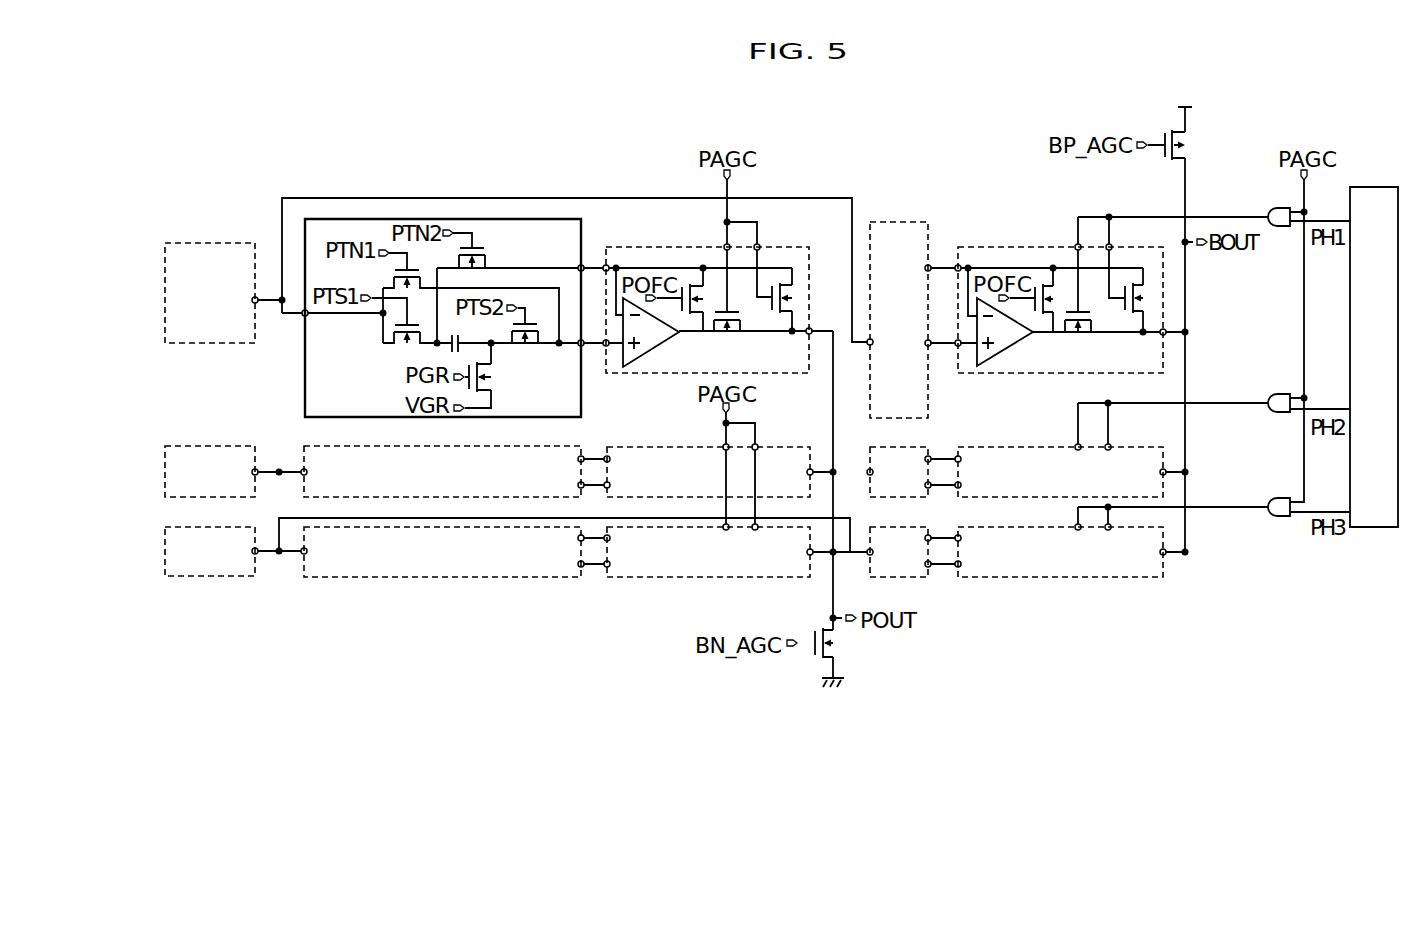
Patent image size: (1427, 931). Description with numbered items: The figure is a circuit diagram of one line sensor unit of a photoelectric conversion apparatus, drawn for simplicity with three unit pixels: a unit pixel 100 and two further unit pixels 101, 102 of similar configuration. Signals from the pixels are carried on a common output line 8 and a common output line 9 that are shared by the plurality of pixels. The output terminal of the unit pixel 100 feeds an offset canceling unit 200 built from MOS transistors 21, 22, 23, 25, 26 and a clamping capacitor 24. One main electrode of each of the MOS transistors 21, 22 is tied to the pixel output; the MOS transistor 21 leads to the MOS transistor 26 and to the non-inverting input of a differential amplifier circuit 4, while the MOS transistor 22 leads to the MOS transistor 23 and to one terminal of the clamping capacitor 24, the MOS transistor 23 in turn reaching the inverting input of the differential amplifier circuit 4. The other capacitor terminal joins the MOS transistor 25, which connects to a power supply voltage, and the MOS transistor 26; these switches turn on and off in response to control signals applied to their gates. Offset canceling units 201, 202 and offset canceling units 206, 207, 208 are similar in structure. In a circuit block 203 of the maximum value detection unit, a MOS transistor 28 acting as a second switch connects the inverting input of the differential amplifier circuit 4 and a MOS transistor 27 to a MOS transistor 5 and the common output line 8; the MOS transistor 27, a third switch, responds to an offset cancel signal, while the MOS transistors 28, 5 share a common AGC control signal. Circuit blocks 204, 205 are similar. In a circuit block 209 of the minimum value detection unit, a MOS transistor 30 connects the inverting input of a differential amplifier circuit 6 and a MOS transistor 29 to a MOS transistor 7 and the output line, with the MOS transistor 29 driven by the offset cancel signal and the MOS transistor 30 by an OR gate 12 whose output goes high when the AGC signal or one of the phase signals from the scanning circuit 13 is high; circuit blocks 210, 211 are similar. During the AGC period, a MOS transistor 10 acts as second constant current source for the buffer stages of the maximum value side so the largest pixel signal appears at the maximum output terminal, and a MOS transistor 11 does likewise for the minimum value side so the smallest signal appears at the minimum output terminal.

The differential amplifier circuit 4 is at (668, 336).
The MOS transistor 5 is at (740, 336).
The differential amplifier circuit 6 is at (1015, 338).
The MOS transistor 7 is at (1085, 336).
The common output line 8 is at (835, 430).
The common output line 9 is at (1187, 360).
The MOS transistor 10 is at (843, 648).
The MOS transistor 11 is at (1190, 135).
The OR gate 12 is at (1272, 208).
The scanning circuit 13 is at (1377, 186).
The MOS transistor 21 is at (396, 271).
The MOS transistor 22 is at (393, 346).
The MOS transistor 23 is at (485, 248).
The clamping capacitor 24 is at (457, 332).
The MOS transistor 25 is at (497, 382).
The MOS transistor 26 is at (538, 345).
The MOS transistor 27 is at (697, 283).
The MOS transistor 28 is at (797, 290).
The MOS transistor 29 is at (1050, 283).
The MOS transistor 30 is at (1130, 314).
The unit pixel 100 is at (195, 345).
The unit pixel 101 is at (195, 498).
The unit pixel 102 is at (195, 578).
The offset canceling unit 200 is at (306, 403).
The offset canceling unit 201 is at (304, 483).
The offset canceling unit 202 is at (373, 578).
The circuit block 203 is at (624, 374).
The circuit block 204 is at (633, 447).
The circuit block 205 is at (622, 578).
The offset canceling unit 206 is at (930, 410).
The offset canceling unit 207 is at (908, 498).
The offset canceling unit 208 is at (908, 578).
The circuit block 209 is at (1073, 374).
The circuit block 210 is at (1000, 498).
The circuit block 211 is at (1000, 578).